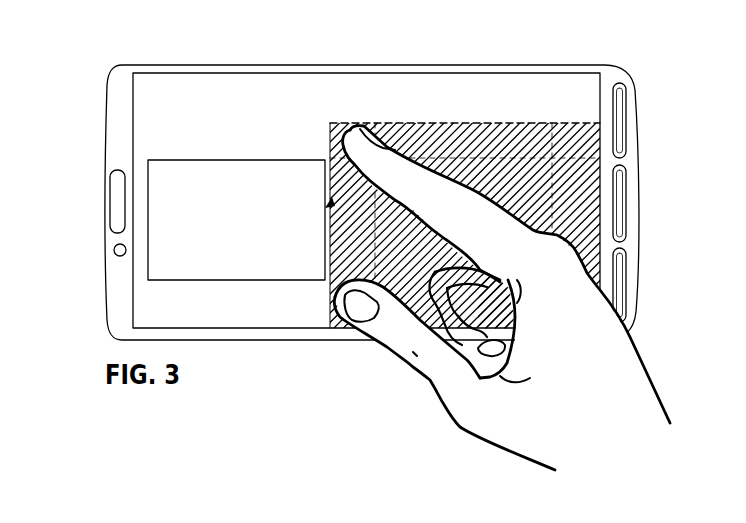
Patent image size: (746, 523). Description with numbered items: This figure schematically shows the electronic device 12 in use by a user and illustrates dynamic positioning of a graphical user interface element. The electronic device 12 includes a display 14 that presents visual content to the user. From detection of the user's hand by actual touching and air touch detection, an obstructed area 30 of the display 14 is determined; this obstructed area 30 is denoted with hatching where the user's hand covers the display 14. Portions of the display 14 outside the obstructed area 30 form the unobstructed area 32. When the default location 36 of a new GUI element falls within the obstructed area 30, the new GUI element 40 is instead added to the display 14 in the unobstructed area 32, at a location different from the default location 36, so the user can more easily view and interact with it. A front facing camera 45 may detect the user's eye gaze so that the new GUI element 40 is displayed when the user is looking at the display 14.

The electronic device 12 is at (107, 98).
The display 14 is at (177, 93).
The obstructed area 30 is at (497, 120).
The unobstructed area 32 is at (203, 145).
The default location 36 is at (467, 157).
The new GUI element 40 is at (247, 175).
The front facing camera 45 is at (113, 250).